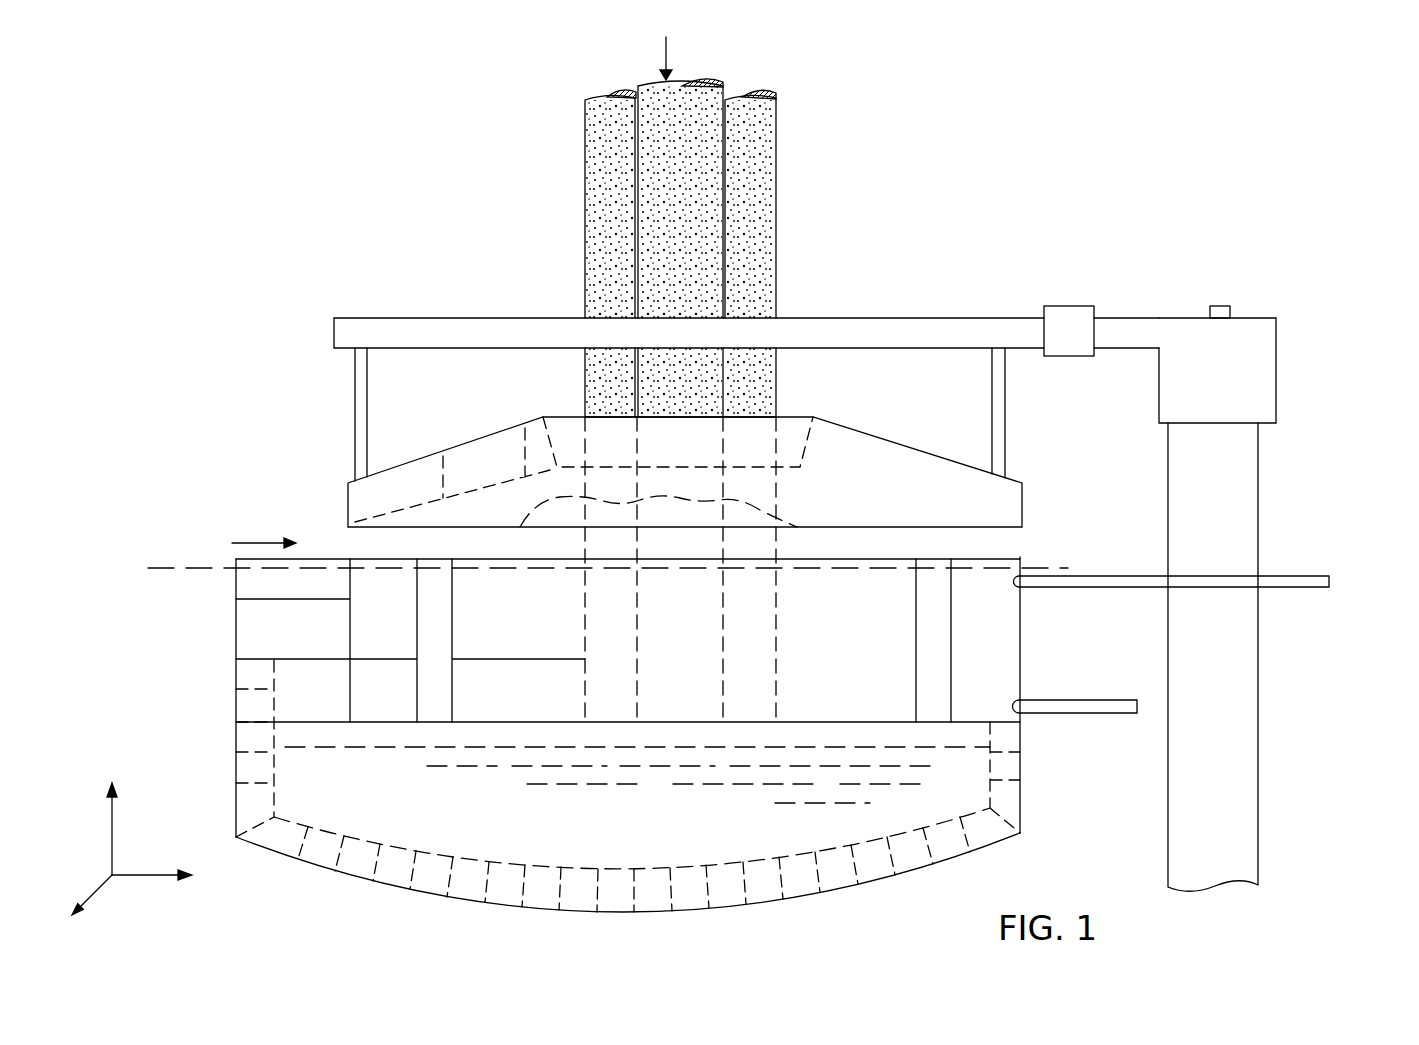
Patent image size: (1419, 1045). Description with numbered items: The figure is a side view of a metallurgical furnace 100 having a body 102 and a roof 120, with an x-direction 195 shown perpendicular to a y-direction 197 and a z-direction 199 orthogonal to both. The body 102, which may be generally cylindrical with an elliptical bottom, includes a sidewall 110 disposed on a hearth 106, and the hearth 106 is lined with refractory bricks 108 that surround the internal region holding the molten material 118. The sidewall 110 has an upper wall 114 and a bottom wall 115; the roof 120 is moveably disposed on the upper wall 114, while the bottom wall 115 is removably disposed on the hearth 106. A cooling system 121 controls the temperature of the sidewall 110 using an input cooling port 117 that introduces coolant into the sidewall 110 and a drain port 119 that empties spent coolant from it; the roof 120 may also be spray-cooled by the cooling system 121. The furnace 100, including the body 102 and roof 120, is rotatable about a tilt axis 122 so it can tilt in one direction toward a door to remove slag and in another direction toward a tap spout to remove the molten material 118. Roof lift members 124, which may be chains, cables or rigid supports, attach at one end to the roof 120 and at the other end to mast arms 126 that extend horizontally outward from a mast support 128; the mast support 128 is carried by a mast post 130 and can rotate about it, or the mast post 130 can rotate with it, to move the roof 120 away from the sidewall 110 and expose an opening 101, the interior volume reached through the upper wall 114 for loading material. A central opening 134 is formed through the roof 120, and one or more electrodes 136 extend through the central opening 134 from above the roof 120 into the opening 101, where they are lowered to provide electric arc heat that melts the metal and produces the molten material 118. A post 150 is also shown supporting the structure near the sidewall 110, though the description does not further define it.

The metallurgical furnace 100 is at (319, 241).
The opening 101 is at (660, 631).
The body 102 is at (1020, 812).
The hearth 106 is at (1020, 748).
The refractory bricks 108 is at (568, 898).
The sidewall 110 is at (236, 588).
The upper wall 114 is at (378, 557).
The bottom wall 115 is at (683, 722).
The input cooling port 117 is at (1296, 574).
The molten material 118 is at (678, 822).
The drain port 119 is at (1113, 700).
The roof 120 is at (424, 452).
The cooling system 121 is at (1358, 580).
The tilt axis 122 is at (520, 570).
The roof lift members 124 is at (355, 412).
The mast arms 126 is at (868, 328).
The mast support 128 is at (1245, 708).
The mast post 130 is at (1216, 306).
The central opening 134 is at (795, 433).
The electrodes 136 is at (566, 116).
The right support post 150 is at (932, 630).
The x-direction 195 is at (174, 874).
The y-direction 197 is at (111, 813).
The z-direction 199 is at (72, 908).